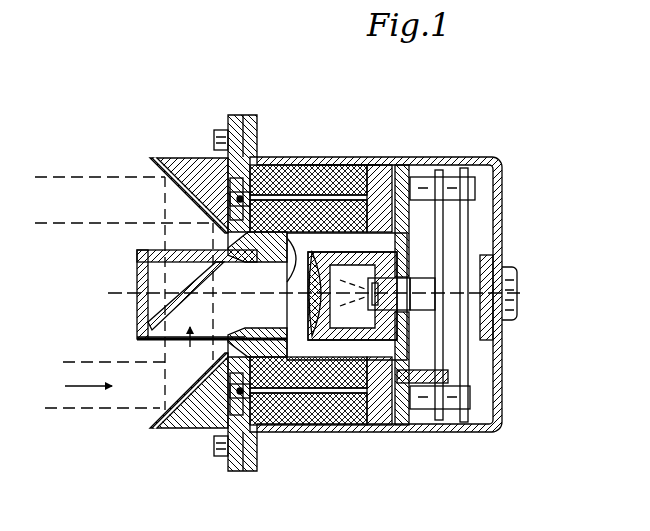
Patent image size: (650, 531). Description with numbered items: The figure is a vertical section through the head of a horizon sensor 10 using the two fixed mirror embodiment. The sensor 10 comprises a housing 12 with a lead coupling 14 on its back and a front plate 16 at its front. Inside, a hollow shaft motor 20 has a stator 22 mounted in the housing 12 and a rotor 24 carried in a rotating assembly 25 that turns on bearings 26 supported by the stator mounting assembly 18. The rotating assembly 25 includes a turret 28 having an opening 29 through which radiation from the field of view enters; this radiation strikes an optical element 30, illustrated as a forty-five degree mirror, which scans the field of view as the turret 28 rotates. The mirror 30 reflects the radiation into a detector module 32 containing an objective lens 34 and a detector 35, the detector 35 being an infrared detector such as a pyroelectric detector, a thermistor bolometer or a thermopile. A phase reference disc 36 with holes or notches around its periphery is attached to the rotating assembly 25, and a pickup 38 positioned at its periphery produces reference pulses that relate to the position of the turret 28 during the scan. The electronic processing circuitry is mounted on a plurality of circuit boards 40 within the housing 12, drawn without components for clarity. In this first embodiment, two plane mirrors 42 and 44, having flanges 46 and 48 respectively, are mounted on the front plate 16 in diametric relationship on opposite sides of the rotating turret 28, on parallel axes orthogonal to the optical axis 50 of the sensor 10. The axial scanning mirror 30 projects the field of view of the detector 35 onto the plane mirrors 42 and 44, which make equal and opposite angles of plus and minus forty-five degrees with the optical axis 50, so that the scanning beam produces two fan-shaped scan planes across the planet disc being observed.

The sensor 10 is at (343, 128).
The housing 12 is at (500, 172).
The lead coupling 14 is at (510, 325).
The front plate 16 is at (240, 473).
The stator mounting assembly 18 is at (385, 165).
The hollow shaft motor 20 is at (268, 182).
The stator 22 is at (340, 160).
The rotor 24 is at (300, 390).
The rotating assembly 25 is at (277, 262).
The bearings 26 is at (385, 350).
The turret 28 is at (137, 268).
The opening 29 is at (178, 338).
The optical element 30 is at (190, 297).
The detector module 32 is at (335, 395).
The objective lens 34 is at (310, 297).
The detector 35 is at (360, 342).
The phase reference disc 36 is at (435, 200).
The pickup 38 is at (445, 400).
The circuit boards 40 is at (462, 235).
The plane mirror 42 is at (150, 418).
The plane mirror 44 is at (150, 163).
The flange 46 is at (220, 456).
The flange 48 is at (228, 118).
The optical axis 50 is at (118, 296).